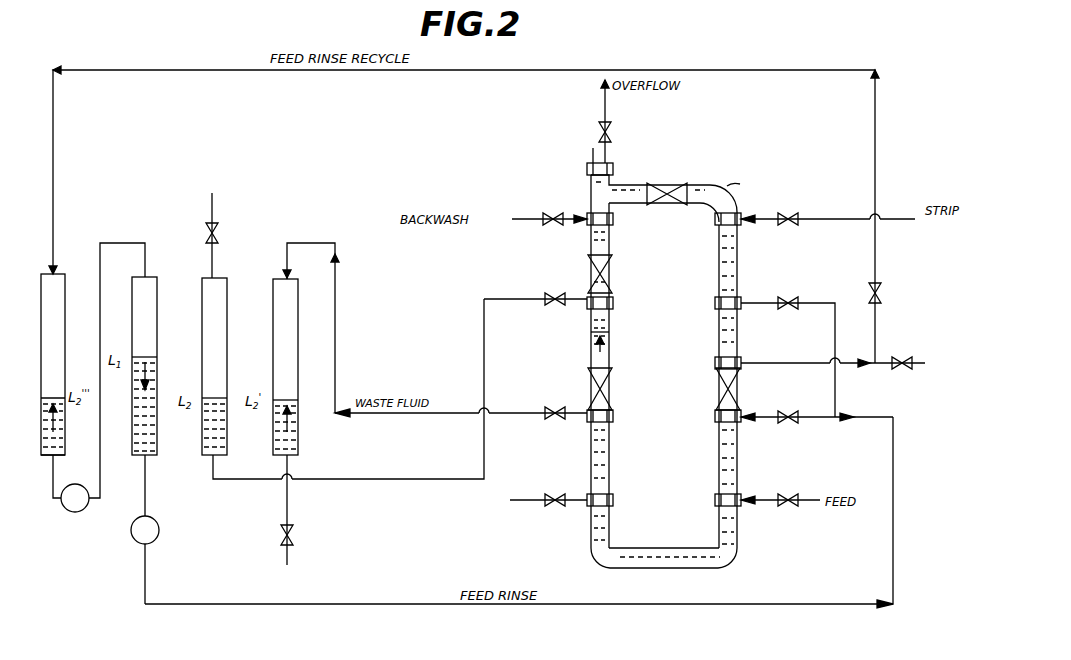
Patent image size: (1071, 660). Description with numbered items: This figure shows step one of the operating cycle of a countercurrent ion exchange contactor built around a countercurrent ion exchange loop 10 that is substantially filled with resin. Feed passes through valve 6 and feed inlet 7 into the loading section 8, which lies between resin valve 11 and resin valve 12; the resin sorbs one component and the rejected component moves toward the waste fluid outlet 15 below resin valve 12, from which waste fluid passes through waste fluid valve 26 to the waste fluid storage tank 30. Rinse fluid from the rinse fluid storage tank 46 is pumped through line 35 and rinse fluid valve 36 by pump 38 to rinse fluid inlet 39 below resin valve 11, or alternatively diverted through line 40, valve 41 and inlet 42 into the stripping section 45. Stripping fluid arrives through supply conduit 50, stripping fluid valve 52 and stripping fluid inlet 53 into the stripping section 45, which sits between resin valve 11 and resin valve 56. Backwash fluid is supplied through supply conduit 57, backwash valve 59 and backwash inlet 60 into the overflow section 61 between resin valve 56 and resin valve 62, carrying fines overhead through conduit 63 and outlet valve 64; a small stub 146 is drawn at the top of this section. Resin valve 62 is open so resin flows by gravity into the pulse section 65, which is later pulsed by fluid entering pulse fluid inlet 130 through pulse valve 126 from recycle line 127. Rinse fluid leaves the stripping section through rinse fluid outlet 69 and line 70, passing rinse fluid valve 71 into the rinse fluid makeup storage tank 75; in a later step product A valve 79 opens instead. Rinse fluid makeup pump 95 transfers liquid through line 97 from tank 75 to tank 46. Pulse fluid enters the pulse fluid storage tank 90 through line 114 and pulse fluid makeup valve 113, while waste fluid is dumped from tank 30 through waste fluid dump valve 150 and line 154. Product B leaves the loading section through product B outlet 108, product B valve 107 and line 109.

The line 70 is at (53, 142).
The rinse fluid valve 71 is at (880, 292).
The rinse fluid makeup storage tank 75 is at (67, 277).
The line 97 is at (53, 482).
The rinse fluid makeup pump 95 is at (66, 520).
The rinse fluid storage tank 46 is at (157, 316).
The pump 38 is at (159, 525).
The line 35 is at (234, 602).
The line 114 is at (212, 204).
The pulse fluid makeup valve 113 is at (219, 232).
The pulse fluid storage tank 90 is at (226, 334).
The line 127 is at (412, 478).
The waste fluid storage tank 30 is at (306, 349).
The waste fluid valve 26 is at (559, 426).
The line 154 is at (288, 556).
The waste fluid dump valve 150 is at (293, 538).
The pulse valve 126 is at (555, 306).
The loading section 8 is at (609, 465).
The countercurrent ion exchange loop 10 is at (734, 190).
The overflow section 61 is at (587, 193).
The conduit 63 is at (613, 163).
The outlet valve 64 is at (611, 134).
The vent stub 146 is at (592, 156).
The supply conduit 57 is at (522, 218).
The backwash valve 59 is at (532, 235).
The backwash inlet 60 is at (613, 224).
The resin valve 62 is at (609, 268).
The pulse fluid inlet 130 is at (613, 308).
The pulse section 65 is at (609, 340).
The resin valve 12 is at (609, 388).
The waste fluid outlet 15 is at (613, 417).
The product B outlet 108 is at (613, 502).
The line 109 is at (525, 503).
The product B valve 107 is at (556, 508).
The stripping fluid inlet 53 is at (715, 225).
The resin valve 56 is at (650, 203).
The supply conduit 50 is at (858, 205).
The stripping fluid valve 52 is at (783, 228).
The inlet 42 is at (715, 303).
The valve 41 is at (792, 310).
The stripping section 45 is at (719, 330).
The rinse fluid outlet 69 is at (715, 363).
The line 40 is at (832, 342).
The product A valve 79 is at (903, 371).
The resin valve 11 is at (737, 388).
The rinse fluid inlet 39 is at (715, 418).
The rinse fluid valve 36 is at (783, 425).
The feed inlet 7 is at (715, 506).
The feed valve 6 is at (785, 506).